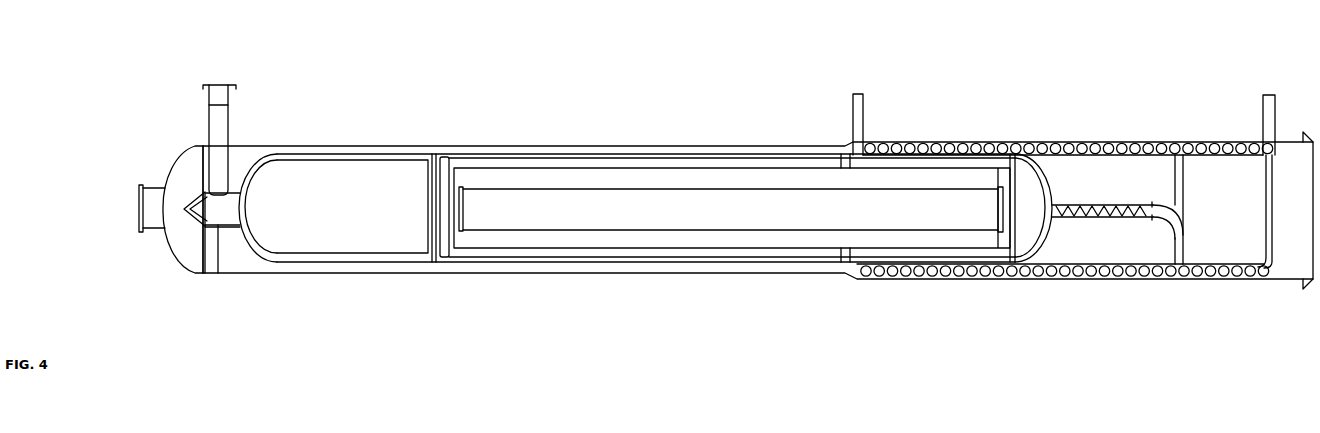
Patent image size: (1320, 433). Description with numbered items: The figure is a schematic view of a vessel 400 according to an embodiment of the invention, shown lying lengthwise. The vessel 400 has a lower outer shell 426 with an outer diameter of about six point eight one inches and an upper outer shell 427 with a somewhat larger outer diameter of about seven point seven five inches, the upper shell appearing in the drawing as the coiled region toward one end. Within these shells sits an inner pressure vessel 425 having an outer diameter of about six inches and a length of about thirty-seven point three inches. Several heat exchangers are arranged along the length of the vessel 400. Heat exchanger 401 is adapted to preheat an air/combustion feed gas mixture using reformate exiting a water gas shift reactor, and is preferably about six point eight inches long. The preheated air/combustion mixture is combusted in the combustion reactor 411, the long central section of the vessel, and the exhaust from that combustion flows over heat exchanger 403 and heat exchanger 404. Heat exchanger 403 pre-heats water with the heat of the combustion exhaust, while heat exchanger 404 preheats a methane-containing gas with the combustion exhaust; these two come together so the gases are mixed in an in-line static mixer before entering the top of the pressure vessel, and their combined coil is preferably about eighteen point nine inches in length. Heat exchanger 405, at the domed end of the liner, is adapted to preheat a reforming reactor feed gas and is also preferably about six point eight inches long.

The vessel 400 is at (513, 72).
The heat exchanger 401 is at (298, 146).
The heat exchanger 403 is at (1132, 279).
The heat exchanger 404 is at (1225, 279).
The heat exchanger 405 is at (961, 257).
The combustion reactor 411 is at (590, 267).
The inner pressure vessel 425 is at (247, 250).
The lower outer shell 426 is at (165, 245).
The upper outer shell 427 is at (986, 142).